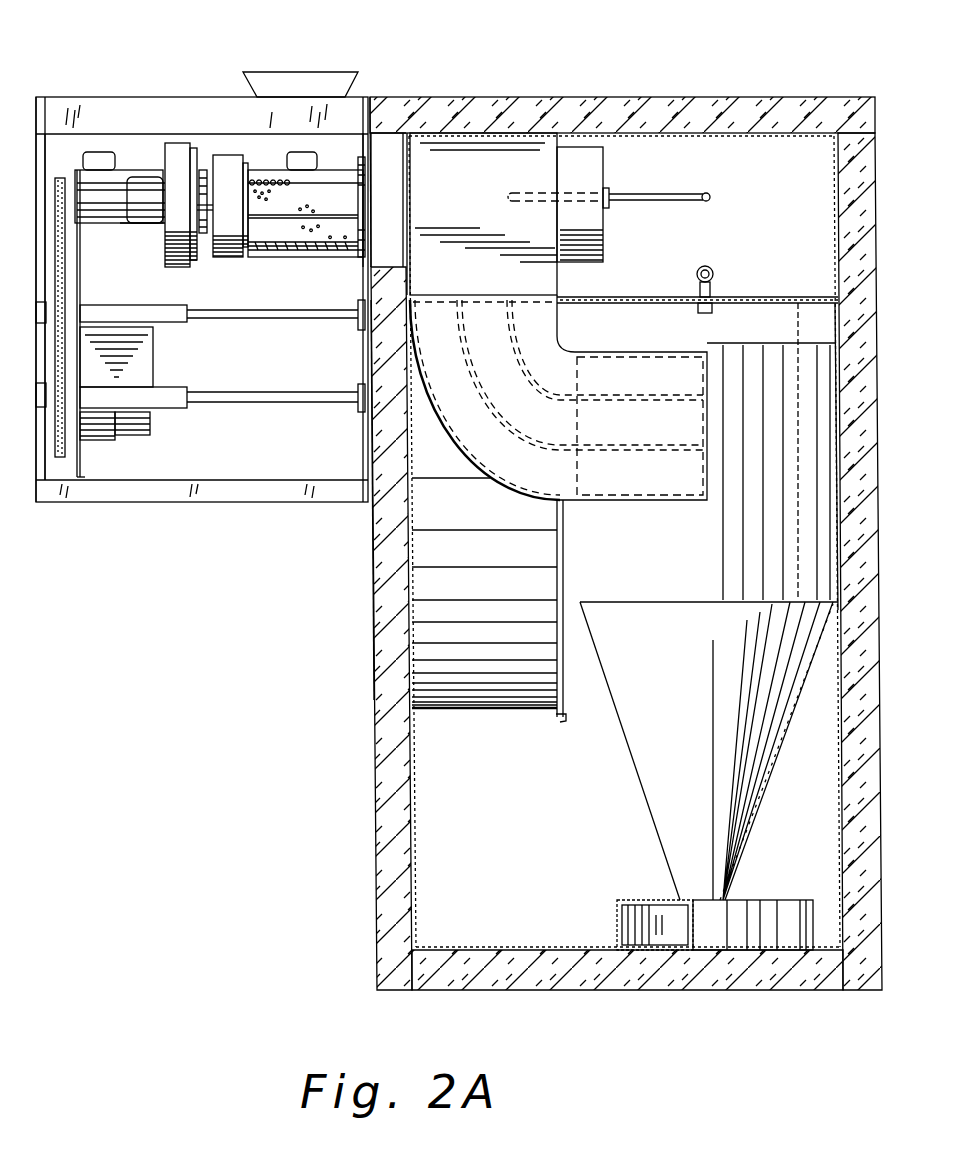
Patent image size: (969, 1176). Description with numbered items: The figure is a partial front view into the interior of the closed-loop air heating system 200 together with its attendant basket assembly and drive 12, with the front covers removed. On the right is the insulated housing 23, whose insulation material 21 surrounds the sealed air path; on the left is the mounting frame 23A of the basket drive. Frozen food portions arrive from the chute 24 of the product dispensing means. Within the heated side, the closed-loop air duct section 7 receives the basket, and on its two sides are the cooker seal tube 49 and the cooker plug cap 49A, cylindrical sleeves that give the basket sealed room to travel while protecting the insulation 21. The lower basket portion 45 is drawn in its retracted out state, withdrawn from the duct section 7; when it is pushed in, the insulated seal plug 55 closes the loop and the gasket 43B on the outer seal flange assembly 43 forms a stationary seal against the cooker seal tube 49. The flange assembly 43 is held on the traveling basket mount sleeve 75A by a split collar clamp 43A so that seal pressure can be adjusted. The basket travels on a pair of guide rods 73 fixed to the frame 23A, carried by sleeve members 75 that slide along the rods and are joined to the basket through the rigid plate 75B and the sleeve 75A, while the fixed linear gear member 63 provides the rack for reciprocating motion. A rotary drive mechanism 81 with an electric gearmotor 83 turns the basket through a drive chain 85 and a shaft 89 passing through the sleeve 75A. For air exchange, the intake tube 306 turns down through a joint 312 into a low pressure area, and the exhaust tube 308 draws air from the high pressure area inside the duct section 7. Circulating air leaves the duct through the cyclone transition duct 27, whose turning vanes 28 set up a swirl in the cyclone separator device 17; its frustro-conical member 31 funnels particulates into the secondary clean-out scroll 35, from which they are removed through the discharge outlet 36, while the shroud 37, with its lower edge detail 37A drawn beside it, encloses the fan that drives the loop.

The insulation material 21 is at (620, 103).
The closed-loop air heating system 200 is at (375, 800).
The housing 23 is at (413, 830).
The mounting frame 23A is at (44, 135).
The basket assembly and drive 12 is at (42, 505).
The closed-loop air duct section 7 is at (483, 135).
The cooker seal tube 49 is at (382, 135).
The cooker plug cap 49A is at (604, 162).
The exhaust tube 308 is at (705, 192).
The intake tube 306 is at (713, 272).
The joint 312 is at (714, 310).
The cyclone separator device 17 is at (800, 305).
The cyclone transition duct 27 is at (450, 445).
The turning vanes 28 is at (478, 395).
The shroud 37 is at (478, 708).
The lip 37A is at (566, 722).
The frustro-conical member 31 is at (640, 792).
The discharge outlet 36 is at (628, 900).
The secondary clean-out scroll 35 is at (780, 900).
The chute 24 is at (347, 88).
The outer seal flange assembly 43 is at (170, 140).
The split collar clamp 43A is at (140, 230).
The gasket 43B is at (195, 140).
The traveling basket mount sleeve 75A is at (204, 150).
The linear gear member 63 is at (263, 150).
The lower basket portion 45 is at (313, 224).
The drive chain 85 is at (64, 294).
The shaft 89 is at (205, 232).
The insulated seal plug 55 is at (228, 258).
The sleeve members 75 is at (157, 323).
The guide rods 73 is at (262, 390).
The rotary drive mechanism 81 is at (110, 440).
The electric gearmotor 83 is at (150, 436).
The rigid plate 75B is at (82, 480).